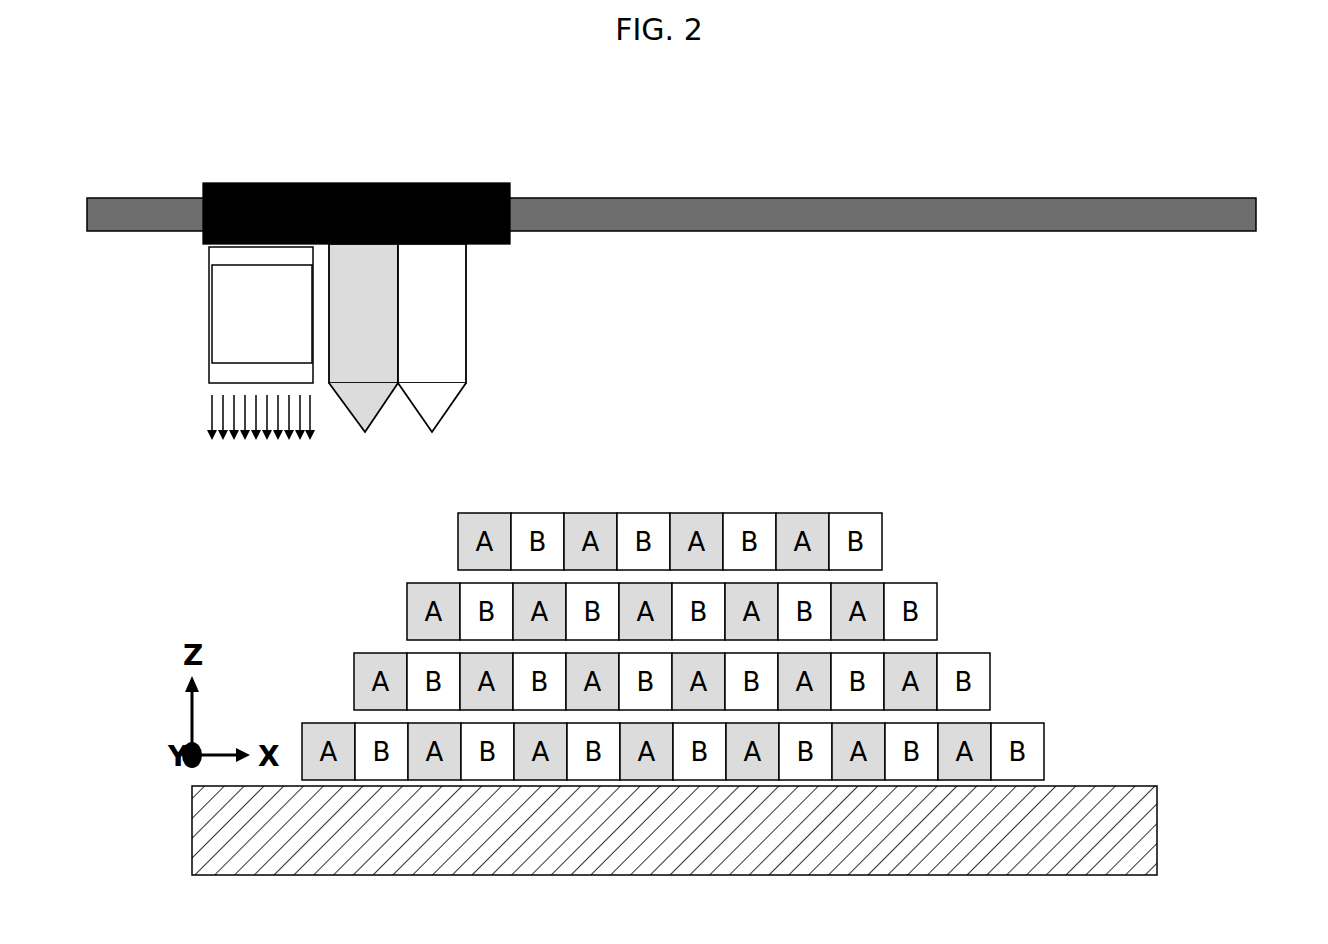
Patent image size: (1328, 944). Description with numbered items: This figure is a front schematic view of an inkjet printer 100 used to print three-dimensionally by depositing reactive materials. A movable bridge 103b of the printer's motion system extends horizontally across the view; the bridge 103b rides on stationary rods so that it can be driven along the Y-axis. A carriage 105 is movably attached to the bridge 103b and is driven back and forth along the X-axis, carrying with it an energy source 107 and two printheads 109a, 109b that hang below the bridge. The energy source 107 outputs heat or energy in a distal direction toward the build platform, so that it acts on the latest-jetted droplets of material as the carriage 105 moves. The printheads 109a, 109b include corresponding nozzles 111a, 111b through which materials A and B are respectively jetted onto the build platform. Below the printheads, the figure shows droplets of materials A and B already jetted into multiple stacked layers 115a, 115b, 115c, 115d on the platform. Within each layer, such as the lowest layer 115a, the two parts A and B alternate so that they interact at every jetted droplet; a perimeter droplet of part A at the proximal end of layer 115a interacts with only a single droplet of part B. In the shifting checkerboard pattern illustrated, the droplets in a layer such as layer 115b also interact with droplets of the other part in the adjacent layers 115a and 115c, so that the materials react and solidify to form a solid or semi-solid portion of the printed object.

The inkjet printer 100 is at (1052, 103).
The movable bridge 103b is at (1214, 203).
The carriage 105 is at (510, 183).
The energy source 107 is at (217, 313).
The printhead 109a is at (385, 280).
The printhead 109b is at (458, 364).
The nozzle 111a is at (363, 420).
The nozzle 111b is at (440, 403).
The layer 115a is at (1072, 756).
The layer 115b is at (1017, 686).
The layer 115c is at (957, 616).
The layer 115d is at (927, 546).